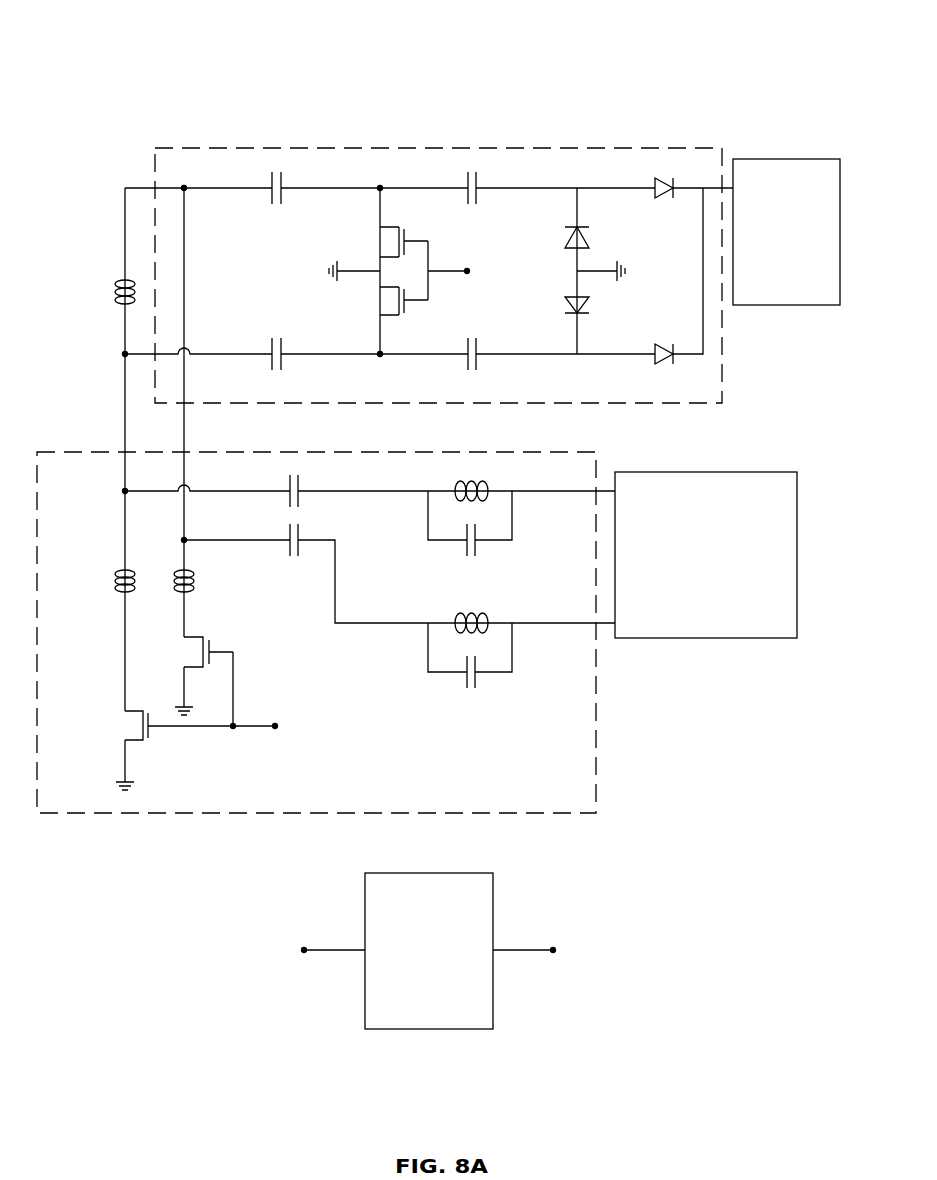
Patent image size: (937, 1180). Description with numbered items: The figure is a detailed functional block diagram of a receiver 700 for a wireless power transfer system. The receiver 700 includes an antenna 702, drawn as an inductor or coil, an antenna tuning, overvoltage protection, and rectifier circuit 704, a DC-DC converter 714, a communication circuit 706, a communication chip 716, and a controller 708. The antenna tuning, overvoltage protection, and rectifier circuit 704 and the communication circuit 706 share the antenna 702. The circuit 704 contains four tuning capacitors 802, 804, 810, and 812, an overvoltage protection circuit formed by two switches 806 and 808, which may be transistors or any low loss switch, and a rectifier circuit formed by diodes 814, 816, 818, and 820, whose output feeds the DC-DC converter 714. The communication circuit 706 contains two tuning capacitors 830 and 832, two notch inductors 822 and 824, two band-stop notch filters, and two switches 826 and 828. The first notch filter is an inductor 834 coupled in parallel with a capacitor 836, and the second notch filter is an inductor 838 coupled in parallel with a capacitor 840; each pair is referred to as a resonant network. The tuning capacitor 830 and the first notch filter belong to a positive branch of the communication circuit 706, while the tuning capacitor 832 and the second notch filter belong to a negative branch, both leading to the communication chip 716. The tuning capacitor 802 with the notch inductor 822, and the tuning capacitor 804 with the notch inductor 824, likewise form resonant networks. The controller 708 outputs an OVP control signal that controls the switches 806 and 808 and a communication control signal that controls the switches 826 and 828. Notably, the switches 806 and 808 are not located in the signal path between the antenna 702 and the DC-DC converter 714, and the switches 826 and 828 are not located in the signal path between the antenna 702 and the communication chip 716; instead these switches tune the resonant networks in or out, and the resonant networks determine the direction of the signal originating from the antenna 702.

The receiver 700 is at (120, 42).
The antenna 702 is at (119, 283).
The antenna tuning, overvoltage protection, and rectifier circuit 704 is at (465, 403).
The communication circuit 706 is at (545, 452).
The controller 708 is at (429, 951).
The DC-DC converter 714 is at (786, 232).
The communication chip 716 is at (706, 555).
The tuning capacitor 802 is at (295, 188).
The tuning capacitor 804 is at (295, 353).
The switch 806 is at (392, 226).
The switch 808 is at (392, 316).
The tuning capacitor 810 is at (491, 188).
The tuning capacitor 812 is at (491, 353).
The diode 814 is at (585, 226).
The diode 816 is at (585, 315).
The diode 818 is at (667, 178).
The diode 820 is at (667, 362).
The notch inductor 822 is at (118, 572).
The notch inductor 824 is at (190, 572).
The switch 826 is at (138, 744).
The switch 828 is at (194, 637).
The tuning capacitor 830 is at (312, 490).
The tuning capacitor 832 is at (312, 539).
The inductor 834 is at (500, 490).
The capacitor 836 is at (500, 541).
The inductor 838 is at (500, 622).
The capacitor 840 is at (500, 673).